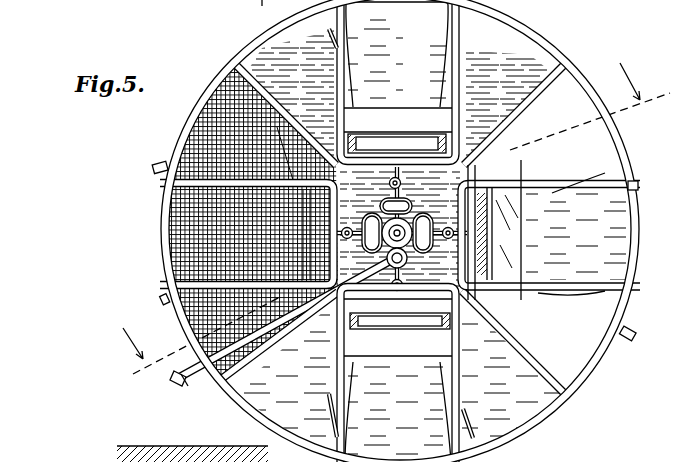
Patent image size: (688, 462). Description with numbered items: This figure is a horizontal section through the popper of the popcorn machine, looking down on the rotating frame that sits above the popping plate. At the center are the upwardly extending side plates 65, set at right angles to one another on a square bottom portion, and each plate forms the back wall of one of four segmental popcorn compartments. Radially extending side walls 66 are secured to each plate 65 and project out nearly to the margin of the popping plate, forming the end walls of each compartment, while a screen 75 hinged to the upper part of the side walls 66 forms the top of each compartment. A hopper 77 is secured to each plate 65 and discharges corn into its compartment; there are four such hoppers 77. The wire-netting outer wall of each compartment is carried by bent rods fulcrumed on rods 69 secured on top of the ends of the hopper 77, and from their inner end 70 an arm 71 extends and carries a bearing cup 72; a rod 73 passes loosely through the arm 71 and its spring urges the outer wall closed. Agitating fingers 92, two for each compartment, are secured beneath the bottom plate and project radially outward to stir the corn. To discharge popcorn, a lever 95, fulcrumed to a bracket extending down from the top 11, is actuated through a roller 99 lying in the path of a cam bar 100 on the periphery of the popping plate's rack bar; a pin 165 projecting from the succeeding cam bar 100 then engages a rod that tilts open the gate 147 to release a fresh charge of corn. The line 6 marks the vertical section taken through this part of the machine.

The gate 147 is at (246, 10).
The agitating fingers 92 is at (331, 44).
The hopper 77 is at (434, 72).
The cam bar 100 is at (555, 56).
The section line 6 is at (396, 222).
The radially extending side walls 66 is at (532, 99).
The pin 165 is at (157, 164).
The bearing cup 72 is at (381, 204).
The arm 71 is at (401, 184).
The inner end 70 is at (470, 205).
The side plates 65 is at (368, 221).
The rod 73 is at (482, 231).
The rods 69 is at (479, 247).
The screen 75 is at (172, 243).
The lever 95 is at (385, 258).
The roller 99 is at (203, 382).
The top 11 is at (172, 455).